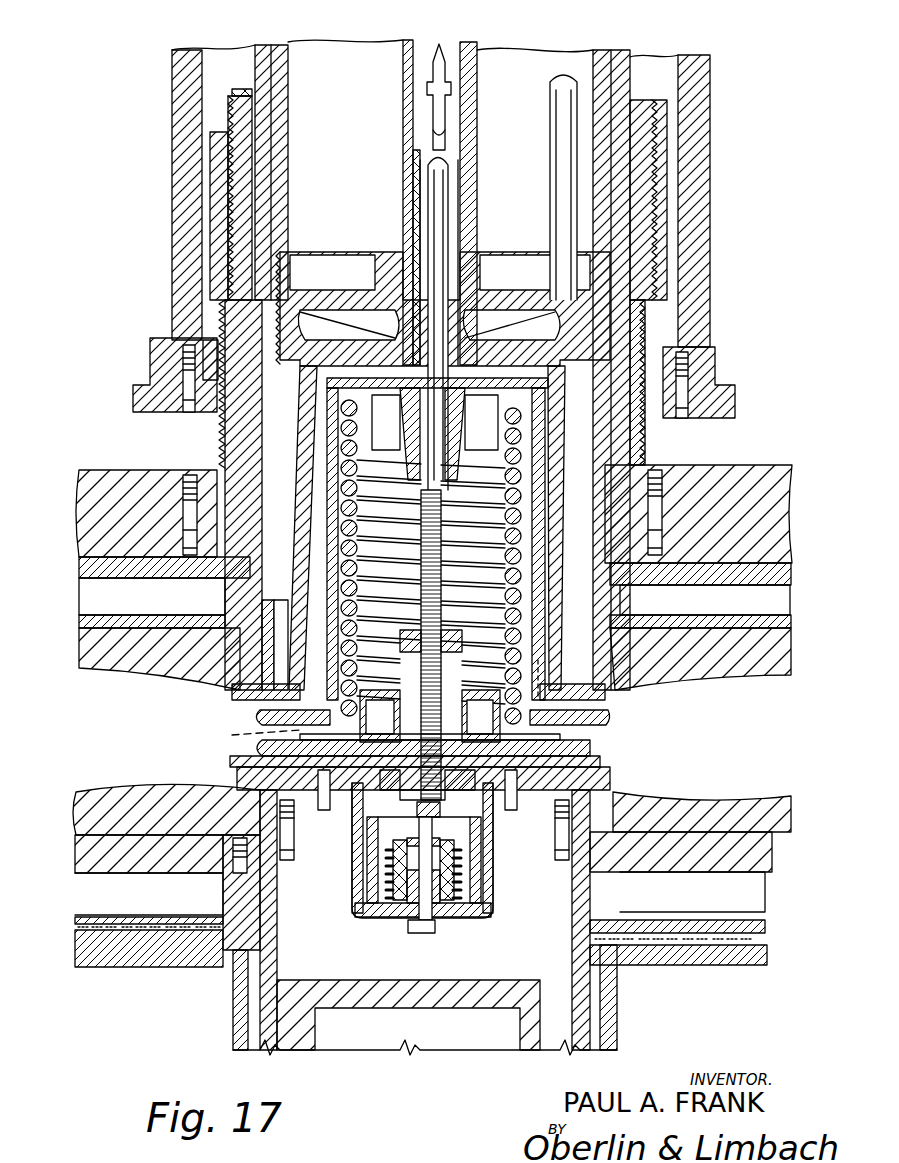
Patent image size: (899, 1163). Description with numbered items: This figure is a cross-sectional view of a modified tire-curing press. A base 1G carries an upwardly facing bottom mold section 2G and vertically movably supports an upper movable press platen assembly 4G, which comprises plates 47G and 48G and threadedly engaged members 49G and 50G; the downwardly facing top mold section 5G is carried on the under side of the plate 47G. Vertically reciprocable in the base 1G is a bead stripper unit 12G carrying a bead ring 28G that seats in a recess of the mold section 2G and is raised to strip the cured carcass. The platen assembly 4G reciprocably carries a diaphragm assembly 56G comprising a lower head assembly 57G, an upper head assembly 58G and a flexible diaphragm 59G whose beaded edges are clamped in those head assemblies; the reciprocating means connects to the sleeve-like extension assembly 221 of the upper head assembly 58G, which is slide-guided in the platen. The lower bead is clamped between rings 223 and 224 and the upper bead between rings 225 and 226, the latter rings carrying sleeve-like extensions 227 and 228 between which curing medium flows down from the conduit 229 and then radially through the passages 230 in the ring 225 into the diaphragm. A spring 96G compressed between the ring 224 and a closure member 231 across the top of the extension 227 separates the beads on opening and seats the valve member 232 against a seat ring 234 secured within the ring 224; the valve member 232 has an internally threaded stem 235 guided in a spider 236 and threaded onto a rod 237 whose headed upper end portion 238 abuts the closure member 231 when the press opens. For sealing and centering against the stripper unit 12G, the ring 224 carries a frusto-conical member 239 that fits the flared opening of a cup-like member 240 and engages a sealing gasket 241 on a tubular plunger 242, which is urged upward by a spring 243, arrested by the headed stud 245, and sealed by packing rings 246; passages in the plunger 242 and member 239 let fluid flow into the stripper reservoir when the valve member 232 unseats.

The sleeve-like extension assembly 221 is at (596, 70).
The headed upper end portion 238 is at (446, 88).
The conduit 229 is at (416, 176).
The rod 237 is at (440, 205).
The threadedly engaged member 50G is at (655, 312).
The closure member 231 is at (525, 382).
The threadedly engaged member 49G is at (648, 448).
The upper movable press platen assembly 4G is at (730, 478).
The spring 96G is at (521, 494).
The plate 48G is at (783, 527).
The diaphragm assembly 56G is at (297, 528).
The plate 47G is at (770, 612).
The sleeve-like extension 228 is at (300, 600).
The sleeve-like extension 227 is at (322, 660).
The internally threaded stem 235 is at (440, 700).
The passages 230 is at (256, 738).
The ring 226 is at (240, 694).
The ring 225 is at (256, 719).
The flexible diaphragm 59G is at (618, 700).
The spider 236 is at (380, 716).
The seat ring 234 is at (477, 716).
The top mold section 5G is at (716, 668).
The upper head assembly 58G is at (598, 722).
The ring 224 is at (585, 746).
The lower head assembly 57G is at (593, 756).
The bead ring 28G is at (605, 784).
The bottom mold section 2G is at (720, 812).
The frusto-conical member 239 is at (408, 800).
The valve member 232 is at (455, 795).
The sealing gasket 241 is at (366, 855).
The cup-like member 240 is at (355, 878).
The packing rings 246 is at (494, 880).
The tubular plunger 242 is at (392, 905).
The spring 243 is at (447, 905).
The stud 245 is at (420, 940).
The ring 223 is at (565, 812).
The bead stripper unit 12G is at (440, 985).
The base 1G is at (152, 950).